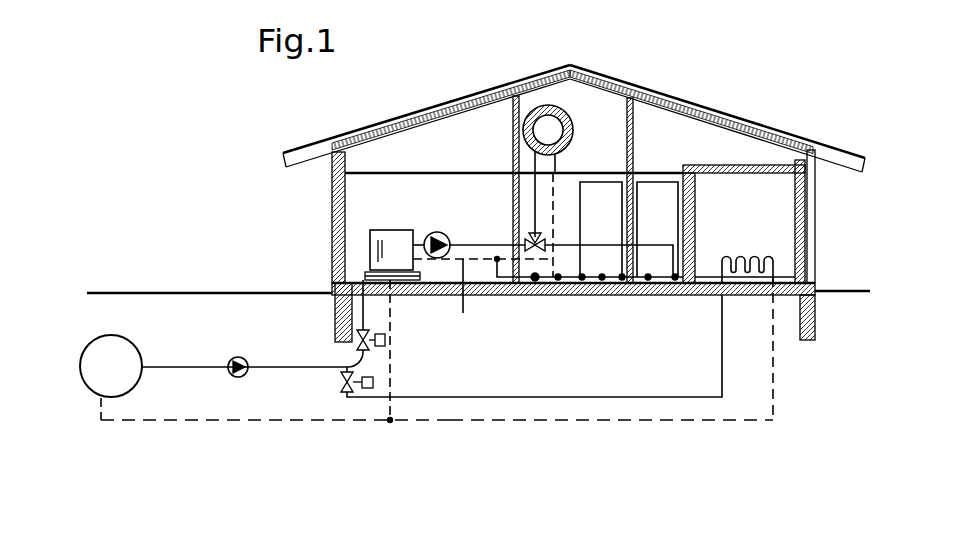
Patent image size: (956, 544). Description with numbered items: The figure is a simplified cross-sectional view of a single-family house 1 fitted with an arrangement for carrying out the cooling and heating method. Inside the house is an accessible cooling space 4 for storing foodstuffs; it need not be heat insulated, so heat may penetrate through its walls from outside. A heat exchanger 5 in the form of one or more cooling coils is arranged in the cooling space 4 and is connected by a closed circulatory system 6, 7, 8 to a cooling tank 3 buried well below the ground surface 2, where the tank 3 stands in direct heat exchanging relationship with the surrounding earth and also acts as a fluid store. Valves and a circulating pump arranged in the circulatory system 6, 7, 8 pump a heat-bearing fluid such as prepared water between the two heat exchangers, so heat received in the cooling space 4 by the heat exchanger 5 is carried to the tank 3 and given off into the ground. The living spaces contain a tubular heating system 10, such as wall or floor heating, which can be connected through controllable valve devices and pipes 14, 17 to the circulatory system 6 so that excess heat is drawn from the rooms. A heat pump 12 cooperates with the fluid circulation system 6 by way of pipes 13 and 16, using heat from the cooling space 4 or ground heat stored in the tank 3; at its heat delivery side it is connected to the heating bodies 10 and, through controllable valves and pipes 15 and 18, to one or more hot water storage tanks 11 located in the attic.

The single-family house 1 is at (737, 92).
The ground surface 2 is at (164, 284).
The cooling tank 3 is at (134, 343).
The cooling space 4 is at (790, 218).
The heat exchanger 5 is at (773, 263).
The closed circulatory system 6 is at (553, 428).
The circulatory system 7 is at (288, 423).
The circulatory system 8 is at (200, 366).
The tubular heating system 10 is at (652, 204).
The hot water storage tank 11 is at (579, 107).
The heat pump 12 is at (388, 218).
The pipe 13 is at (393, 357).
The pipe 14 is at (466, 301).
The pipe 15 is at (557, 203).
The pipe 16 is at (337, 317).
The pipe 17 is at (598, 243).
The pipe 18 is at (533, 198).